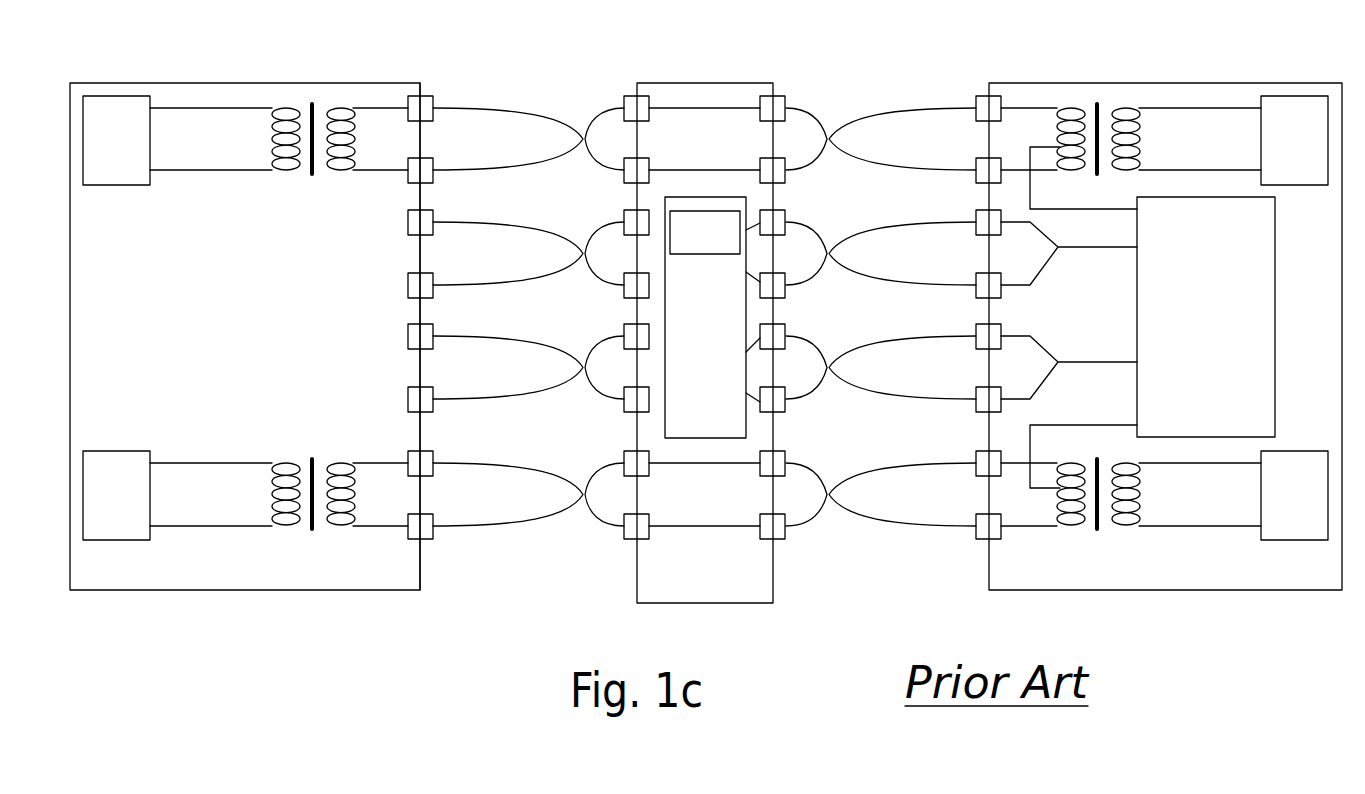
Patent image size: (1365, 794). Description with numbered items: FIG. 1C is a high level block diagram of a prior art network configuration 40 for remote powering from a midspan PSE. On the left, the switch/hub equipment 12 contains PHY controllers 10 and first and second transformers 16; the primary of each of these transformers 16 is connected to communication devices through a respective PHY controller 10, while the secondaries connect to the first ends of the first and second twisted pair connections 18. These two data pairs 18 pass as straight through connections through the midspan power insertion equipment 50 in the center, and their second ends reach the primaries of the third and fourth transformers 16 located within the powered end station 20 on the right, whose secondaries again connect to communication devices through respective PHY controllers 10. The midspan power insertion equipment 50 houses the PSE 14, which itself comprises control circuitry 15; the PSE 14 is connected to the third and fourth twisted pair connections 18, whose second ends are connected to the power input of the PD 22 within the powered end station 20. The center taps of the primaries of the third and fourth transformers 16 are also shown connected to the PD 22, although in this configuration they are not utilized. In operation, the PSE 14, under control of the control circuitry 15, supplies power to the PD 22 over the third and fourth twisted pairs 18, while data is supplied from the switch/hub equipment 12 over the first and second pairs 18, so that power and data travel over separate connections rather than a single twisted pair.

The PHY controller 10 is at (120, 185).
The switch/hub equipment 12 is at (218, 592).
The PSE 14 is at (665, 425).
The control circuitry 15 is at (668, 214).
The transformer 16 is at (326, 185).
The twisted pair connection 18 is at (475, 108).
The powered end station 20 is at (1207, 592).
The PD 22 is at (1135, 273).
The network configuration 40 is at (881, 38).
The midspan power insertion equipment 50 is at (773, 580).